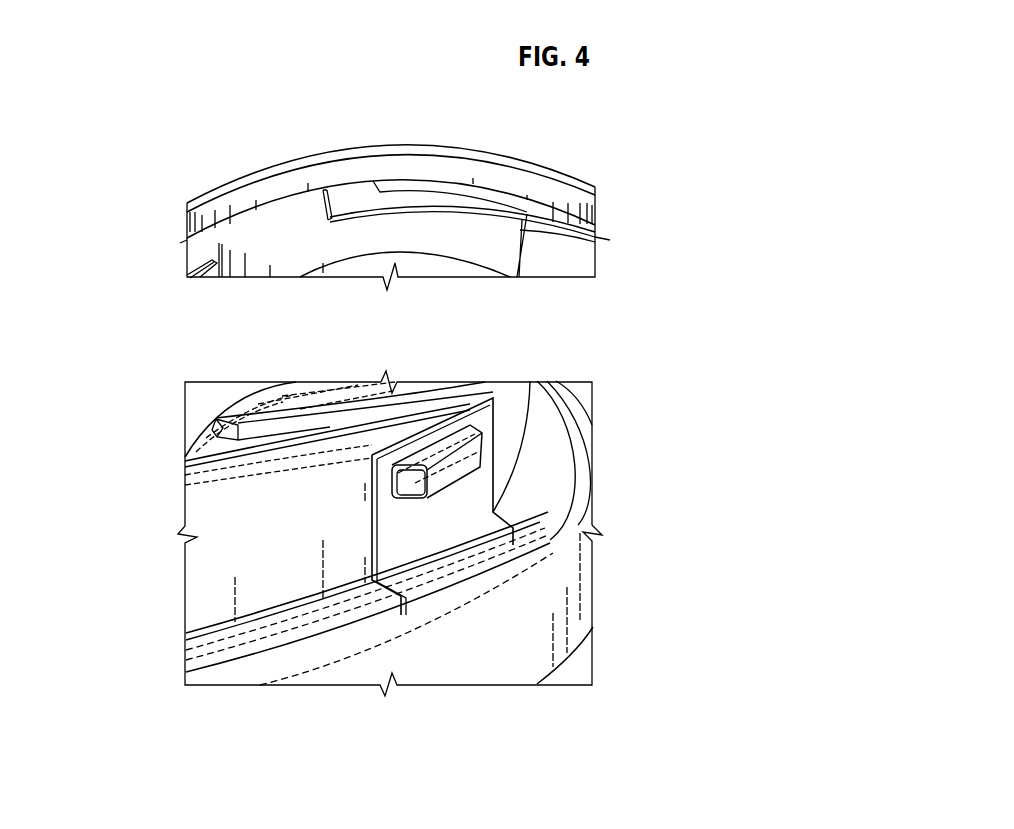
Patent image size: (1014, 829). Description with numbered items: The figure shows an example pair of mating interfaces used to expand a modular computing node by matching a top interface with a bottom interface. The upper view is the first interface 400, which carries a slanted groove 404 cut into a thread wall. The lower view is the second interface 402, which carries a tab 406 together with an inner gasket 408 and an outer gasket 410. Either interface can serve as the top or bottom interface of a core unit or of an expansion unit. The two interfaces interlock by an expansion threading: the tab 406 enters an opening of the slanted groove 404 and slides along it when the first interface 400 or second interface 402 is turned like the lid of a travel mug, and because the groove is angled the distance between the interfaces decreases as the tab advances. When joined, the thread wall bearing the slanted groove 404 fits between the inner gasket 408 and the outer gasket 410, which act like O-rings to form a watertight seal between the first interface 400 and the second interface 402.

The first interface 400 is at (534, 237).
The second interface 402 is at (580, 553).
The slanted groove 404 is at (467, 210).
The tab 406 is at (468, 460).
The inner gasket 408 is at (518, 497).
The outer gasket 410 is at (535, 548).